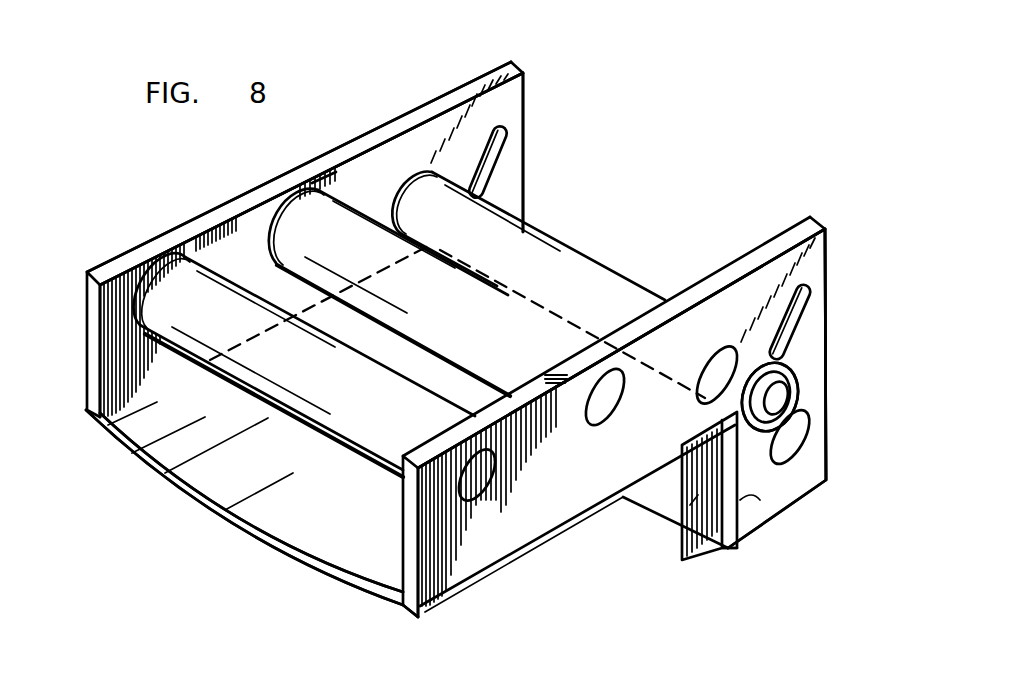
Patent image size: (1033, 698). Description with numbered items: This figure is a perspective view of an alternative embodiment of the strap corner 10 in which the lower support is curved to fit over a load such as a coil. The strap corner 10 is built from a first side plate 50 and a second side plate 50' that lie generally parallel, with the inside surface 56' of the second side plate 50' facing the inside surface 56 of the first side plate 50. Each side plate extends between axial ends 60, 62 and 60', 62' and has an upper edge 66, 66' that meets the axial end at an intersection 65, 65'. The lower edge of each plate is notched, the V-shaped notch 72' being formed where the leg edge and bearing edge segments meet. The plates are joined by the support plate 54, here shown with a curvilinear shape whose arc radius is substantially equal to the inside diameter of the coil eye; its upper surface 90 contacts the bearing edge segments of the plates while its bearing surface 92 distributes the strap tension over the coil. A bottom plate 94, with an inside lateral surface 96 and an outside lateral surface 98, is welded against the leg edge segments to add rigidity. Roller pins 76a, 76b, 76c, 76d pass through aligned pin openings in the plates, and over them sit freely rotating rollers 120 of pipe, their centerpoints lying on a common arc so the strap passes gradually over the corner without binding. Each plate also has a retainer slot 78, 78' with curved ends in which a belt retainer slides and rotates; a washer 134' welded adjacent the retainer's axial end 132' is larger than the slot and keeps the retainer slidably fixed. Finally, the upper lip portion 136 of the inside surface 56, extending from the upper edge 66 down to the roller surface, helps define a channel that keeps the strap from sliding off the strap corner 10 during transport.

The strap corner 10 is at (625, 84).
The first side plate 50 is at (311, 245).
The second side plate 50' is at (622, 423).
The support plate 54 is at (239, 547).
The inside surface 56 is at (399, 307).
The inside surface 56' is at (436, 625).
The axial end 60 is at (353, 245).
The axial end 60' is at (663, 423).
The axial end 62 is at (68, 344).
The axial end 62' is at (468, 536).
The intersection 65 is at (540, 36).
The intersection 65' is at (846, 195).
The upper edge 66 is at (305, 162).
The upper edge 66' is at (614, 309).
The V-shaped notch 72' is at (688, 486).
The roller pin 76a is at (490, 487).
The roller pin 76b is at (605, 427).
The roller pin 76c is at (718, 345).
The roller pin 76d is at (788, 466).
The retainer slot 78 is at (536, 162).
The retainer slot 78' is at (833, 322).
The upper surface 90 is at (200, 484).
The bearing surface 92 is at (322, 592).
The bottom plate 94 is at (723, 548).
The inside lateral surface 96 is at (752, 502).
The outside lateral surface 98 is at (720, 443).
The roller 120 is at (517, 300).
The axial end 132' is at (822, 449).
The washer 134' is at (825, 400).
The upper lip portion 136 is at (346, 152).